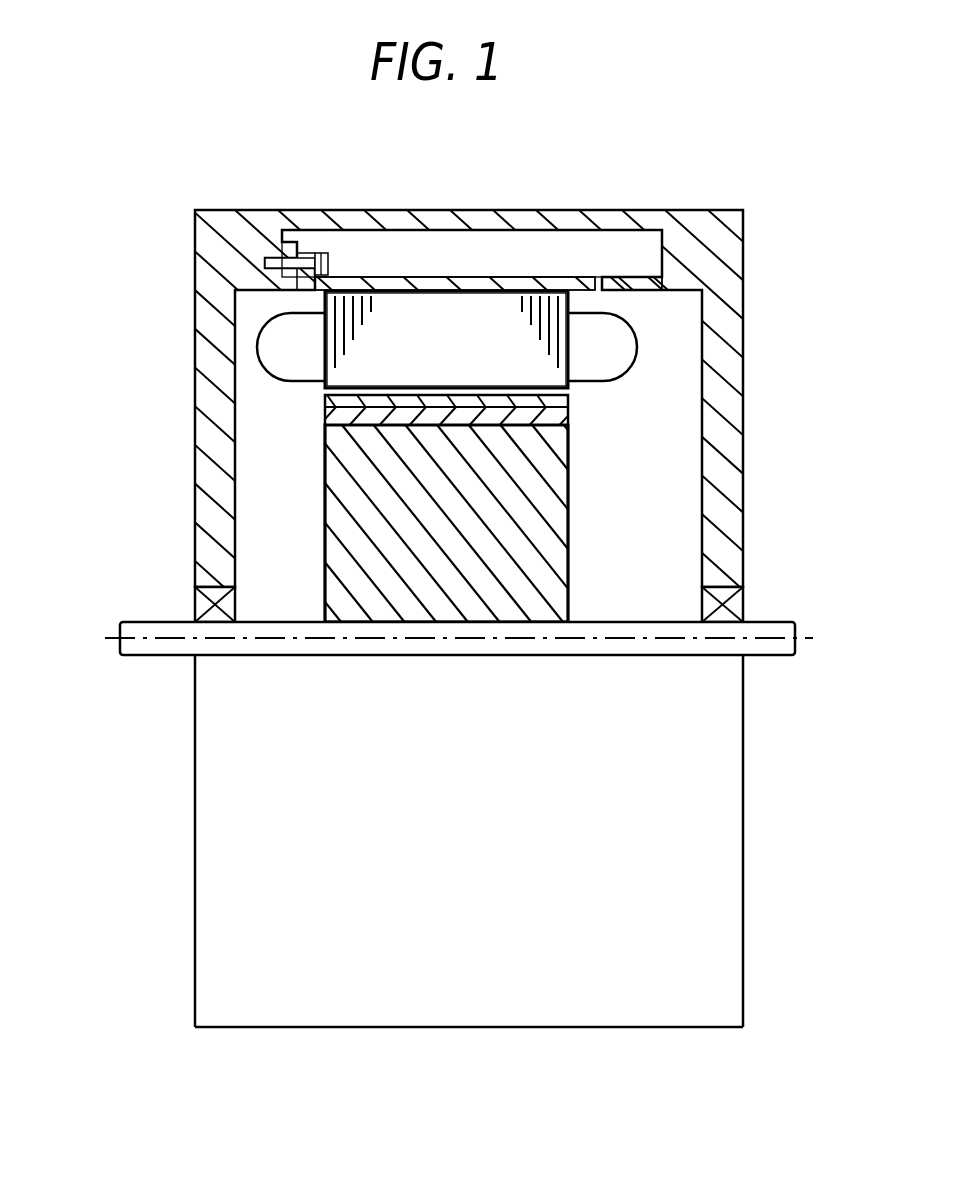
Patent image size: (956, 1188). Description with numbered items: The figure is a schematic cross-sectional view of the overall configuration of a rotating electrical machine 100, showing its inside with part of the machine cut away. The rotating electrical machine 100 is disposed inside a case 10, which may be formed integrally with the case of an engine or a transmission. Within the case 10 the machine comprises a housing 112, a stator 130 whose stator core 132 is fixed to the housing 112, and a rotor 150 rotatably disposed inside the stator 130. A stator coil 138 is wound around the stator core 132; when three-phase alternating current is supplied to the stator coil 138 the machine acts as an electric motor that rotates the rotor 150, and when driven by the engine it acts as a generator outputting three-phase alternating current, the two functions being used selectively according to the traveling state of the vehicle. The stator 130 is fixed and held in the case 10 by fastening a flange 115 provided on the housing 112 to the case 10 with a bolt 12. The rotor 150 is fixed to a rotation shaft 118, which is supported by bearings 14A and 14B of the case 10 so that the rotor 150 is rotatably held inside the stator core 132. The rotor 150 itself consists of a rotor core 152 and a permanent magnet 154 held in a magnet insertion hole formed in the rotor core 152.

The case 10 is at (213, 328).
The bolt 12 is at (273, 256).
The bearing 14A is at (203, 602).
The bearing 14B is at (733, 602).
The rotating electrical machine 100 is at (577, 266).
The housing 112 is at (437, 278).
The flange 115 is at (308, 252).
The rotation shaft 118 is at (145, 645).
The stator 130 is at (645, 345).
The stator core 132 is at (358, 370).
The stator coil 138 is at (278, 345).
The rotor 150 is at (578, 493).
The rotor core 152 is at (342, 557).
The permanent magnet 154 is at (555, 410).